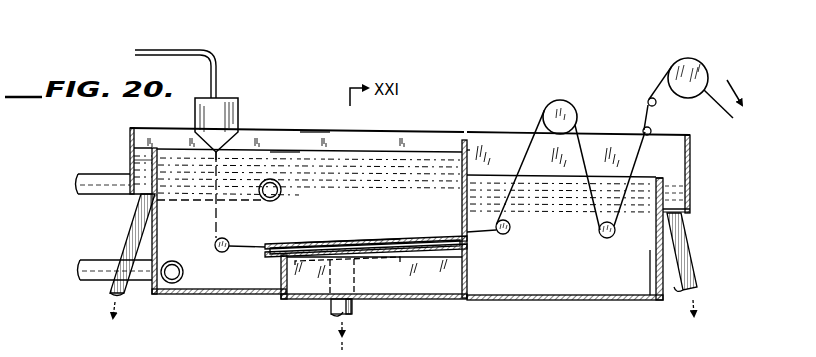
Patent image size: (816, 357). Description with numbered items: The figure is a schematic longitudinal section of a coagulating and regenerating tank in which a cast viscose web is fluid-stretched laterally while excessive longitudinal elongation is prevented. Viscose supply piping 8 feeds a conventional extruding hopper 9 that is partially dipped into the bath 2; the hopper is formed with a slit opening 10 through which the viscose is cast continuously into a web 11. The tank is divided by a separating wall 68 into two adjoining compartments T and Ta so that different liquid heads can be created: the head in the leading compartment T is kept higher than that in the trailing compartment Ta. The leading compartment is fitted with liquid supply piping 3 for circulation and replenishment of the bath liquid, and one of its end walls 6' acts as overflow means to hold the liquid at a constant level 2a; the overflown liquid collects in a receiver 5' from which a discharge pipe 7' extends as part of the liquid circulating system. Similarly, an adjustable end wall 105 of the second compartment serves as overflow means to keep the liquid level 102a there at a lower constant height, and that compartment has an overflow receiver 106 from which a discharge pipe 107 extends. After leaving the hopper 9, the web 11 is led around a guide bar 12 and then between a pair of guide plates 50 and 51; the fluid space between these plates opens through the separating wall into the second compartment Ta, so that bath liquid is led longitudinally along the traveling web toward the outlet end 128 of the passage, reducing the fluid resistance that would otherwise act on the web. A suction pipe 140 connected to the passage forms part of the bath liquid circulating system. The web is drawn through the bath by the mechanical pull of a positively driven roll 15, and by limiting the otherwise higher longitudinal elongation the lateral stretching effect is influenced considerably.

The leading compartment T is at (246, 280).
The trailing compartment Ta is at (566, 284).
The coagulating and regenerating bath 2 is at (307, 160).
The liquid level 2a is at (285, 150).
The liquid supply piping 3 is at (102, 196).
The receiver 5' is at (129, 162).
The end wall 6' is at (129, 139).
The discharge pipe 7' is at (124, 256).
The viscose supply piping 8 is at (163, 50).
The extruding hopper 9 is at (214, 110).
The slit opening 10 is at (223, 145).
The web 11 is at (214, 213).
The guide bar 12 is at (214, 245).
The positively driven roll 15 is at (566, 105).
The guide plate 50 is at (377, 240).
The guide plate 51 is at (374, 258).
The separating wall 68 is at (462, 140).
The liquid level 102a is at (502, 172).
The adjustable end wall 105 is at (663, 184).
The overflow receiver 106 is at (678, 191).
The discharge pipe 107 is at (683, 245).
The outlet end 128 is at (484, 244).
The suction pipe 140 is at (352, 304).